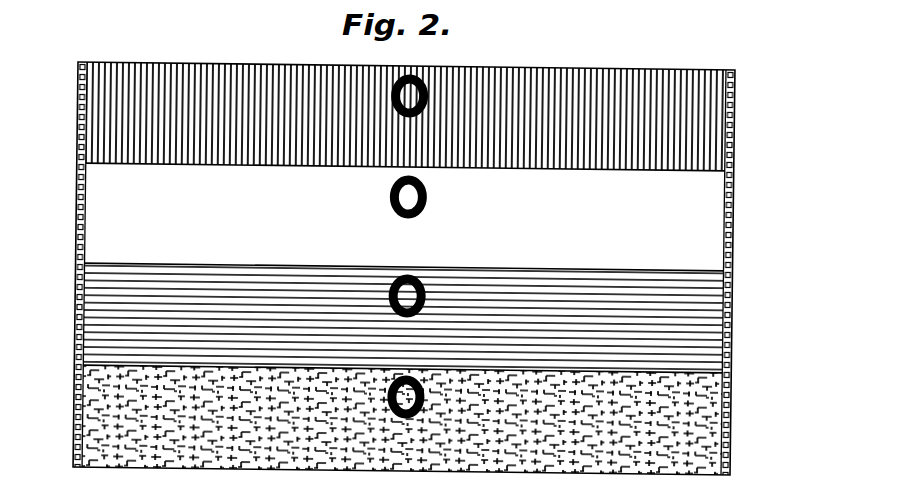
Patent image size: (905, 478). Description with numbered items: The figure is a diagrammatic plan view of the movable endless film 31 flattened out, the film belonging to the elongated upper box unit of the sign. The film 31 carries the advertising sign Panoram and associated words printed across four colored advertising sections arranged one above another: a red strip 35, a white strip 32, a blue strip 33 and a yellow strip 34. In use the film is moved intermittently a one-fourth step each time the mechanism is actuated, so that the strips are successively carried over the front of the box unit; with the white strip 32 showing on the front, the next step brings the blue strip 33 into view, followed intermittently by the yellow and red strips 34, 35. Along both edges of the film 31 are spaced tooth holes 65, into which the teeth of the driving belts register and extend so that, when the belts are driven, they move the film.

The endless film 31 is at (393, 253).
The white strip 32 is at (24, 149).
The blue strip 33 is at (392, 317).
The yellow strip 34 is at (31, 346).
The red strip 35 is at (395, 101).
The tooth holes 65 is at (393, 267).